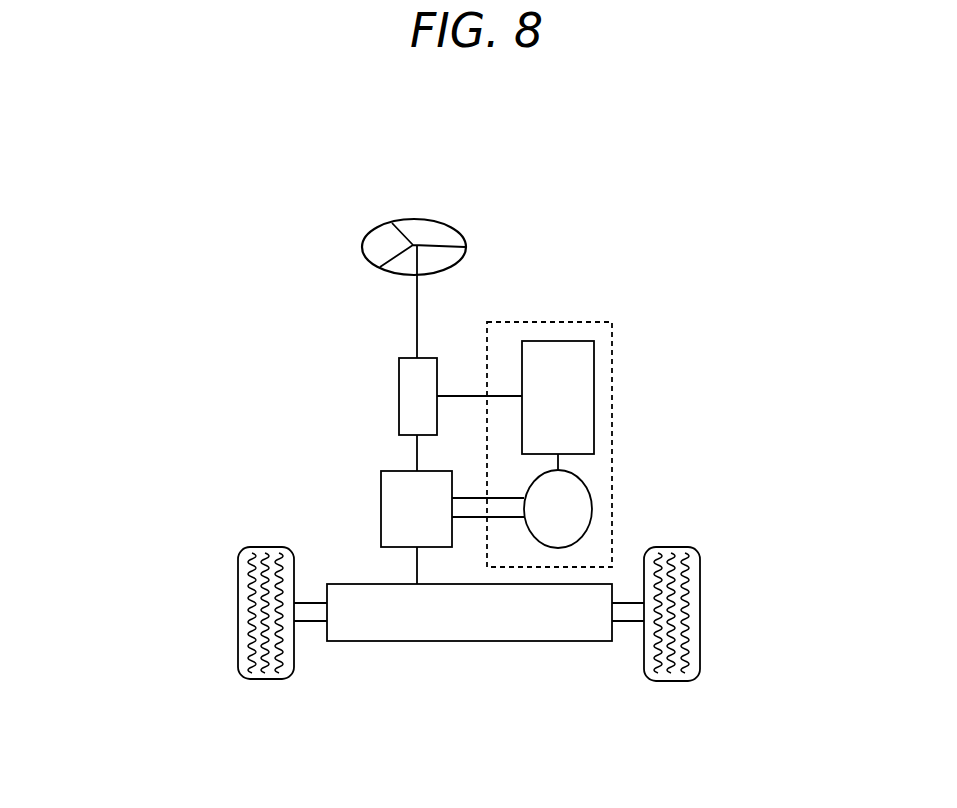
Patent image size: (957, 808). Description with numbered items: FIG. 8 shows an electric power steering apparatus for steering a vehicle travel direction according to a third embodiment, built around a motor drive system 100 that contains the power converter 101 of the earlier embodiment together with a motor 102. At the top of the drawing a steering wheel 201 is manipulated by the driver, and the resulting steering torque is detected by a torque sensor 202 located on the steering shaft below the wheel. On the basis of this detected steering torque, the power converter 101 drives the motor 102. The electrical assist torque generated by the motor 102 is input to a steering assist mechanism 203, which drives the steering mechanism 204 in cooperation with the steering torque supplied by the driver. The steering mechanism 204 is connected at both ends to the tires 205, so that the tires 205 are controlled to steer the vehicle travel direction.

The motor drive system 100 is at (505, 320).
The power converter 101 is at (594, 396).
The motor 102 is at (592, 490).
The steering wheel 201 is at (408, 220).
The torque sensor 202 is at (399, 396).
The steering assist mechanism 203 is at (381, 510).
The steering mechanism 204 is at (482, 642).
The tires 205 is at (700, 565).